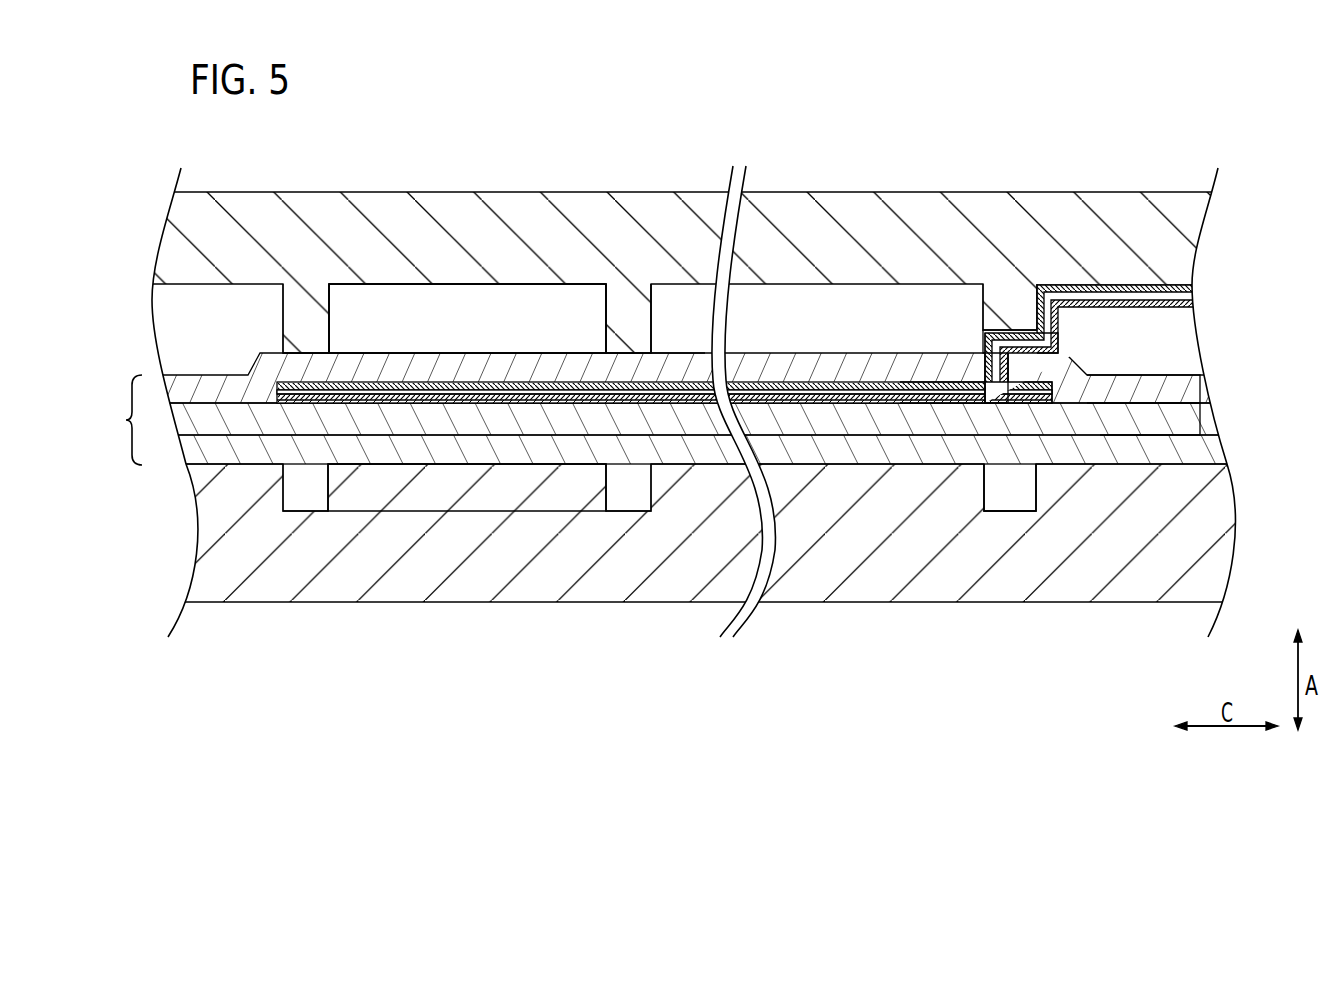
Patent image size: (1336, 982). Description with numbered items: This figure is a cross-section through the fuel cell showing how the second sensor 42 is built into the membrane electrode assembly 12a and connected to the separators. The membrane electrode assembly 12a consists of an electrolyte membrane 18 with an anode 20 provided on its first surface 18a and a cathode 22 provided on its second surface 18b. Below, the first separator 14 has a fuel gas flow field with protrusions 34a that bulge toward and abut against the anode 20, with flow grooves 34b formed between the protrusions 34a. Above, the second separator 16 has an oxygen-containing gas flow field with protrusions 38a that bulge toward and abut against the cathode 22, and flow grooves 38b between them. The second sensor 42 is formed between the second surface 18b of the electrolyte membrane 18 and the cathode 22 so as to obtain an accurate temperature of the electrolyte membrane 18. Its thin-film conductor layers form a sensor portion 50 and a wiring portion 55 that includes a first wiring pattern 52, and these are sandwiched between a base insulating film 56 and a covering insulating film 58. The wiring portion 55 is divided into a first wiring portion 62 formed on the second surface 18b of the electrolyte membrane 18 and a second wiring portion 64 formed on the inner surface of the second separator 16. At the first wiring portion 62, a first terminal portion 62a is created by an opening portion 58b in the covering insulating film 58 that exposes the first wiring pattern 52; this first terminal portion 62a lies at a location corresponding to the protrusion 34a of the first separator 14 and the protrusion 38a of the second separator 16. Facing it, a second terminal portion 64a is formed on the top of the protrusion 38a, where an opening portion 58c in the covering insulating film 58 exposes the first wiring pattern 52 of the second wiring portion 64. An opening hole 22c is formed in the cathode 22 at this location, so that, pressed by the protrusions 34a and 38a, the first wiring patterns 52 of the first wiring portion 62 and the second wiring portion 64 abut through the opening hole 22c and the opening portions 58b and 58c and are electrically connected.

The membrane electrode assembly 12a is at (114, 420).
The first separator 14 is at (872, 582).
The second separator 16 is at (925, 216).
The electrolyte membrane 18 is at (1193, 422).
The first surface 18a is at (1168, 425).
The second surface 18b is at (1173, 400).
The anode 20 is at (1205, 452).
The cathode 22 is at (1197, 393).
The opening hole 22c is at (988, 358).
The protrusion 34a is at (297, 491).
The flow groove 34b is at (456, 503).
The protrusion 38a is at (297, 318).
The flow groove 38b is at (544, 328).
The second sensor 42 is at (453, 332).
The sensor portion 50 is at (766, 368).
The first wiring pattern 52 is at (483, 393).
The wiring portion 55 is at (662, 375).
The base insulating film 56 is at (397, 403).
The covering insulating film 58 is at (427, 388).
The opening portion 58b is at (1070, 357).
The opening portion 58c is at (983, 378).
The first wiring portion 62 is at (972, 403).
The first terminal portion 62a is at (1025, 465).
The second wiring portion 64 is at (1092, 275).
The second terminal portion 64a is at (1017, 328).